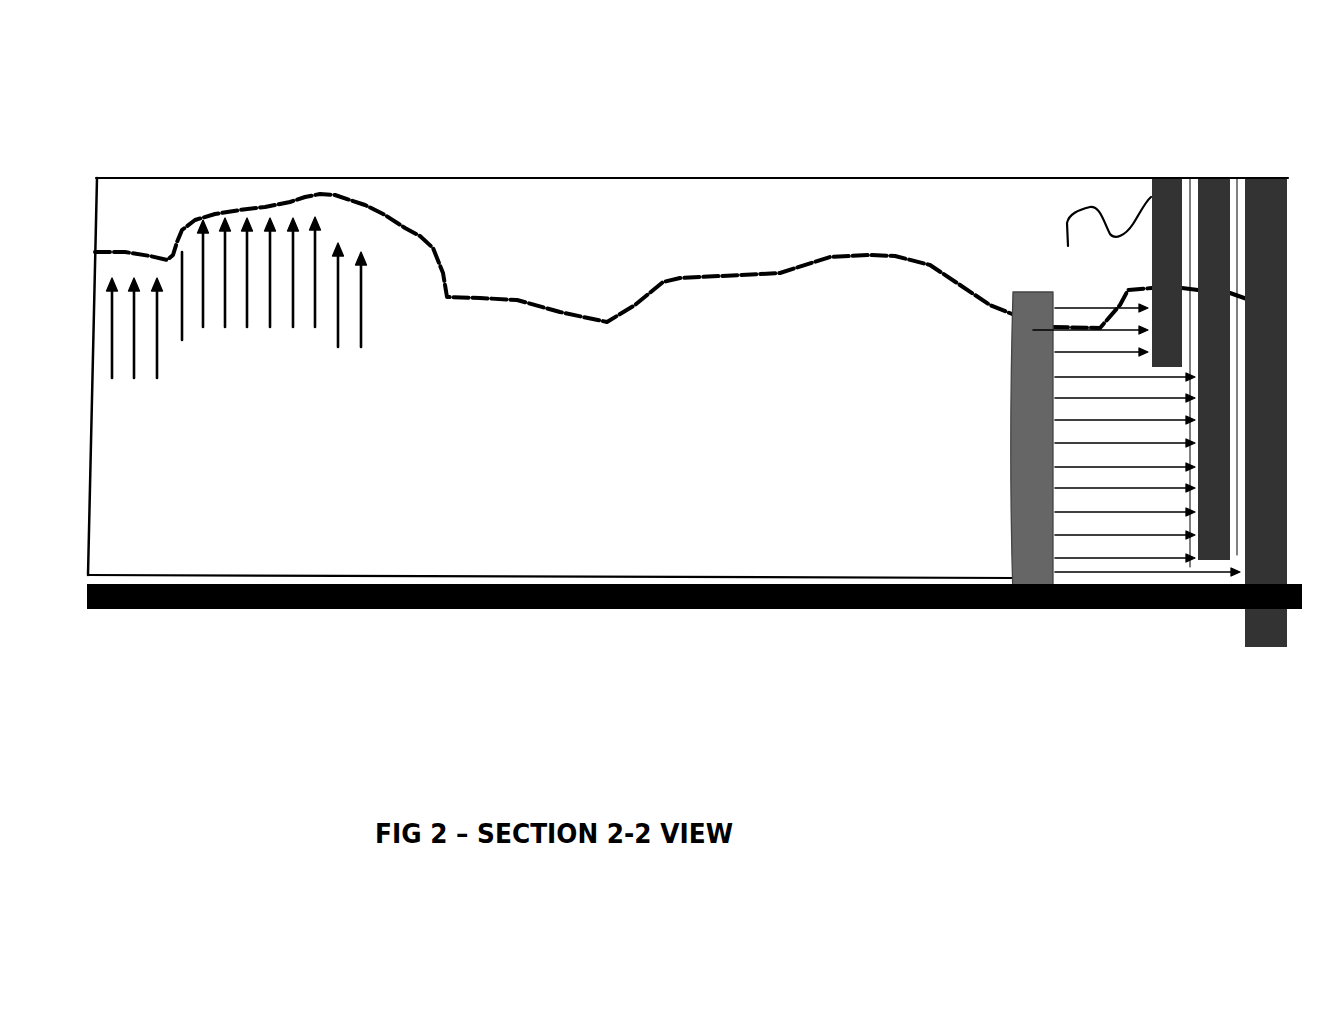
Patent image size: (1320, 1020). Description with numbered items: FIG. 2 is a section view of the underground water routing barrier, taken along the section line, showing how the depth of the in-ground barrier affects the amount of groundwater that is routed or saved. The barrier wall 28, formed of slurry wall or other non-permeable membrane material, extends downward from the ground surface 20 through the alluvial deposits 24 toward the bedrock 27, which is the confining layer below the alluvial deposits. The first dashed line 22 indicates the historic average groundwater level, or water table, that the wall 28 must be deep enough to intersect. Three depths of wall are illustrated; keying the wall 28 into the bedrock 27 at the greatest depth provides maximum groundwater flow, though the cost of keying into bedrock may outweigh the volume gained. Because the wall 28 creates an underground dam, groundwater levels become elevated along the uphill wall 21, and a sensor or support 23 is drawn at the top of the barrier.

The liquid surface line 20 is at (130, 207).
The uphill wall 21 is at (1099, 237).
The water table 22 is at (172, 337).
The sensor support 23 is at (1197, 215).
The alluvial deposits 24 is at (1013, 461).
The bedrock 27 is at (140, 610).
The barrier wall 28 is at (1170, 197).